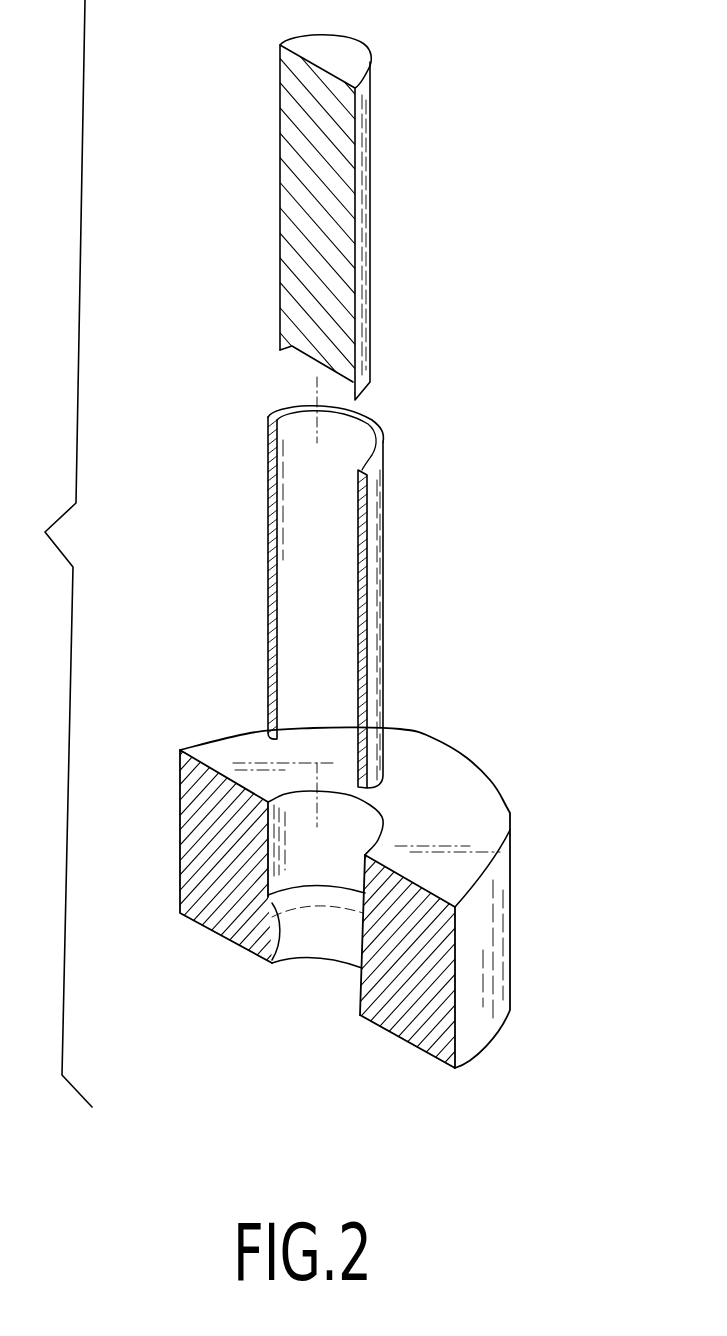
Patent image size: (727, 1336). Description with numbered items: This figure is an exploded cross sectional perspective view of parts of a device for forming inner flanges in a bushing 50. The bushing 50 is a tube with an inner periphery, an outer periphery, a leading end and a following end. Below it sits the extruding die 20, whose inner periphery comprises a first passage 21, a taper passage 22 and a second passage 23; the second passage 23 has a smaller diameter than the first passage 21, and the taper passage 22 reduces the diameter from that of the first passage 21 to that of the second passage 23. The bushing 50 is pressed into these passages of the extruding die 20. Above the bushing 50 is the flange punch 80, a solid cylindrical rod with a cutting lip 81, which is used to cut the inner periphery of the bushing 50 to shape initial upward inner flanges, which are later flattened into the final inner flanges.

The extruding die 20 is at (507, 928).
The first passage 21 is at (370, 848).
The taper passage 22 is at (273, 963).
The second passage 23 is at (358, 993).
The bushing 50 is at (378, 572).
The flange punch 80 is at (368, 233).
The cutting lip 81 is at (280, 352).